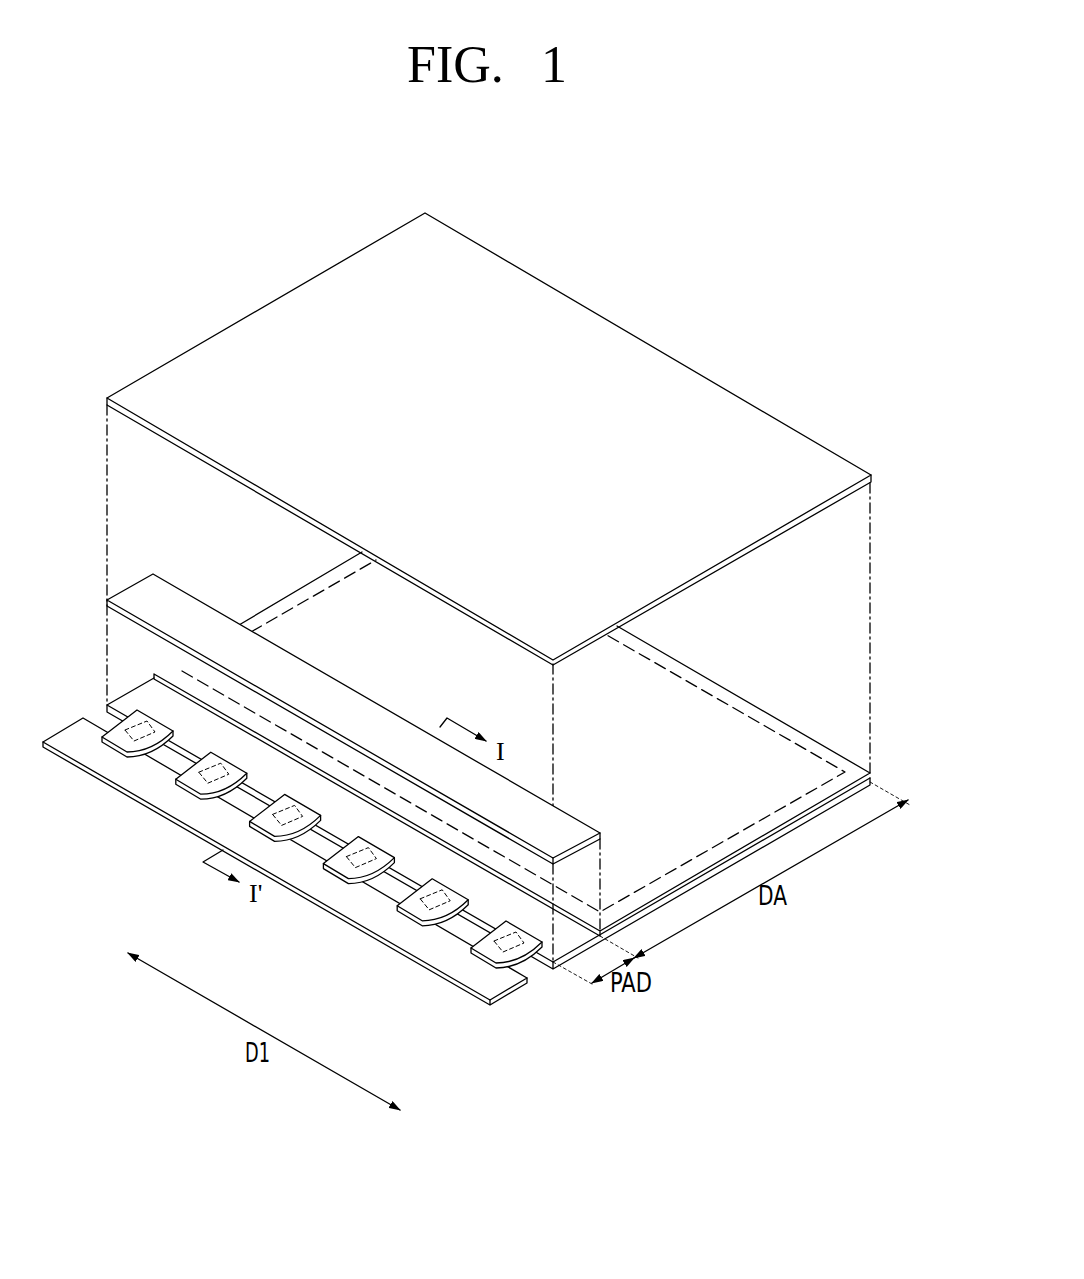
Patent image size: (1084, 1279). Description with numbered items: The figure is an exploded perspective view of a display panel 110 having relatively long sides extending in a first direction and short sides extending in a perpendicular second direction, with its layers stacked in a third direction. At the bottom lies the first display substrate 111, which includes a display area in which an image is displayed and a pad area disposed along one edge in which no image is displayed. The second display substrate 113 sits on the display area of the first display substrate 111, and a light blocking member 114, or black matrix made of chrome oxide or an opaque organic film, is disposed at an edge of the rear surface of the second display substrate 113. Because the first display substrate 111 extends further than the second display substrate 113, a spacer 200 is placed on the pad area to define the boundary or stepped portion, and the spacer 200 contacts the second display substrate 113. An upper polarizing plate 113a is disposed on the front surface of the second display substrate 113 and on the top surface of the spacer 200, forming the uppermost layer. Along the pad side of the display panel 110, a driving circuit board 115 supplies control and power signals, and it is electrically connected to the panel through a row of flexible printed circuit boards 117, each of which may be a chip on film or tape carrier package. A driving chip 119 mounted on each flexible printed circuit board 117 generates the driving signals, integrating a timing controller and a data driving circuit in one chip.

The display panel 110 is at (247, 258).
The first display substrate 111 is at (863, 789).
The second display substrate 113 is at (767, 748).
The upper polarizing plate 113a is at (778, 435).
The light blocking member 114 is at (737, 692).
The spacer 200 is at (194, 584).
The driving circuit board 115 is at (408, 950).
The flexible printed circuit board 117 is at (476, 951).
The driving chip 119 is at (502, 946).